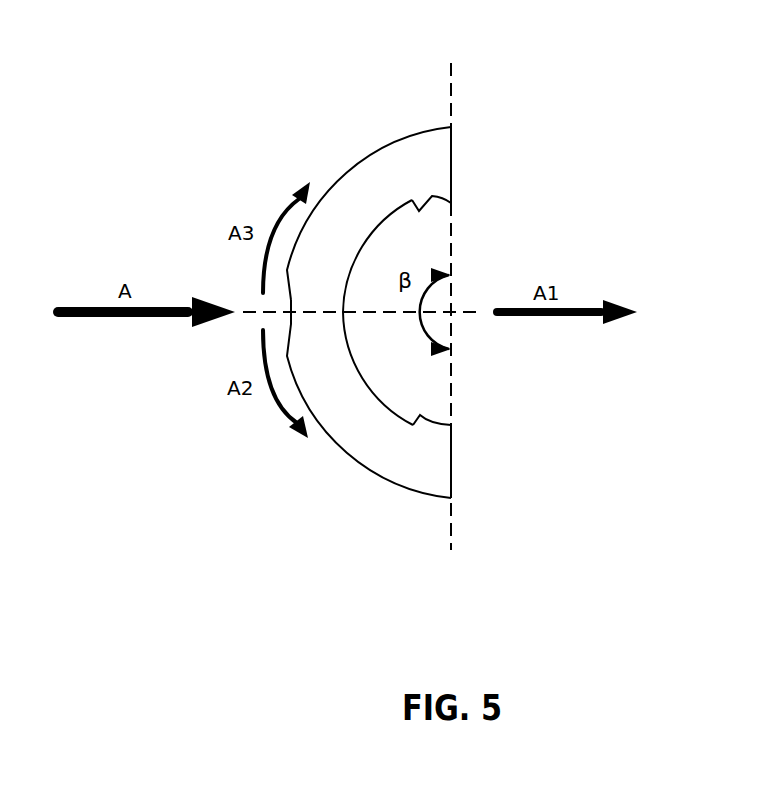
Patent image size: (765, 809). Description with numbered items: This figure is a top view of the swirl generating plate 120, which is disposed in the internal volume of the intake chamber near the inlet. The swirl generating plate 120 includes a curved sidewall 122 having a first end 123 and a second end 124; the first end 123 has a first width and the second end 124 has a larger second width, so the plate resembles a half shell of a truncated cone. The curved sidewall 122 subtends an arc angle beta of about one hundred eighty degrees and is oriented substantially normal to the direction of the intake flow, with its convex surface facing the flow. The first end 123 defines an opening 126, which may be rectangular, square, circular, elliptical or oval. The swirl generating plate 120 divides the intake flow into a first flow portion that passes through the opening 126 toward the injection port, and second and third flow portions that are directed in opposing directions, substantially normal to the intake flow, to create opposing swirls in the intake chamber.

The swirl generating plate 120 is at (316, 94).
The curved sidewall 122 is at (407, 463).
The first end 123 is at (435, 202).
The second end 124 is at (420, 133).
The opening 126 is at (393, 210).